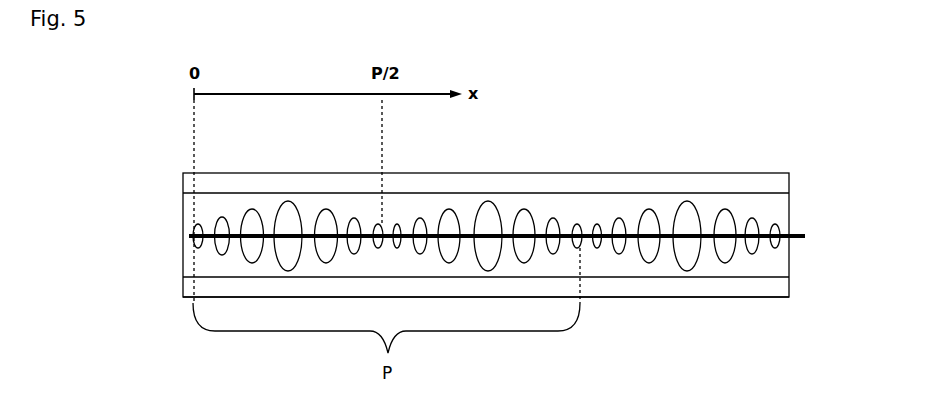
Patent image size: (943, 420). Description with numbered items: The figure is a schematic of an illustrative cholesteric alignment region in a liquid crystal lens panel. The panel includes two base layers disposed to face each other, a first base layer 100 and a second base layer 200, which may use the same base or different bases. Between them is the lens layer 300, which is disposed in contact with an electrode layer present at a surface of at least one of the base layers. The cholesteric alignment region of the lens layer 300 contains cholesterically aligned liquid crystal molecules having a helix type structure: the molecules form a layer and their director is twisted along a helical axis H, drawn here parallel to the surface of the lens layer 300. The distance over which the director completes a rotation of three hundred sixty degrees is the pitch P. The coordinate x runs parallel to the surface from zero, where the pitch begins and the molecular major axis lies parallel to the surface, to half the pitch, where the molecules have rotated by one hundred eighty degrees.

The first base layer 100 is at (183, 178).
The second base layer 200 is at (637, 291).
The lens layer 300 is at (177, 195).